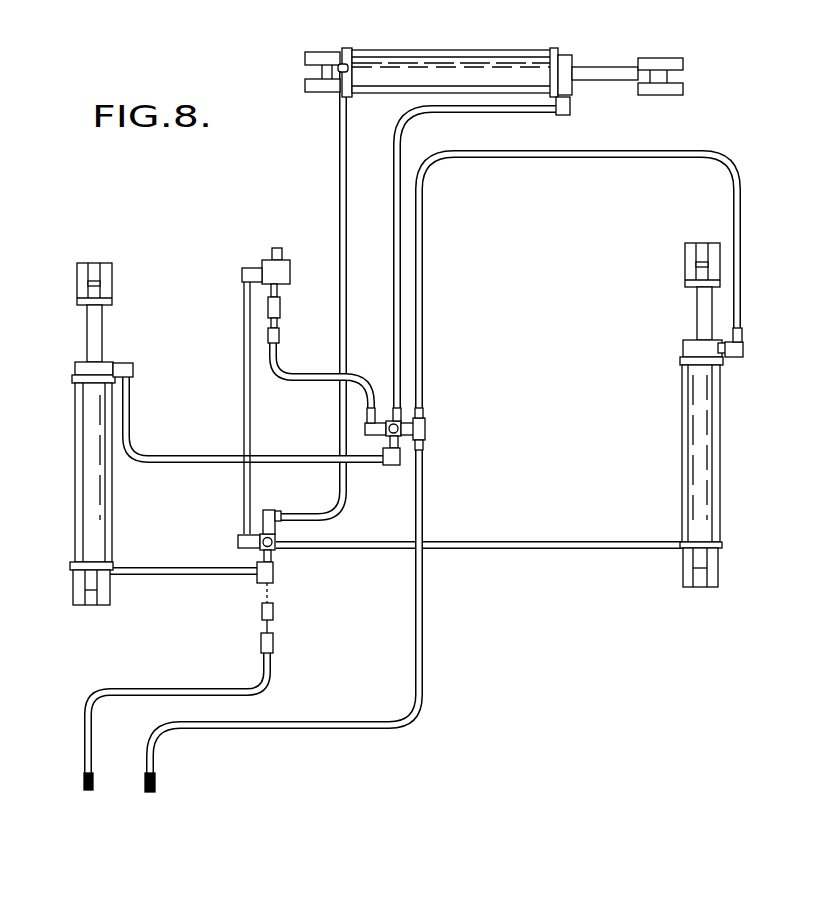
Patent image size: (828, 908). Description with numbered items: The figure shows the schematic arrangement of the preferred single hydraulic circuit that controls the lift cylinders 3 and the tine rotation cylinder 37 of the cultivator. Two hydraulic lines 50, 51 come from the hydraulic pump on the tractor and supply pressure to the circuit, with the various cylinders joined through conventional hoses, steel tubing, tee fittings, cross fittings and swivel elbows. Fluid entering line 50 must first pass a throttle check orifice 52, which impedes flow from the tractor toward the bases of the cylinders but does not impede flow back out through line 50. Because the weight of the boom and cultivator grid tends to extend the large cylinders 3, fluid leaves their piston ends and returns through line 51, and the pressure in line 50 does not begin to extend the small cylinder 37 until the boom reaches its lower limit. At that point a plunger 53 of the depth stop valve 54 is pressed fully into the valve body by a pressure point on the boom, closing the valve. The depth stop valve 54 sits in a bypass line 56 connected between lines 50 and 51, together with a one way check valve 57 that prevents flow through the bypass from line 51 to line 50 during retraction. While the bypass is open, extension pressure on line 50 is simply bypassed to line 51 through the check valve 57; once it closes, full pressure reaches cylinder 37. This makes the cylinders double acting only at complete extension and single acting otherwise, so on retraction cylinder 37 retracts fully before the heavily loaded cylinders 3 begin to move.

The lift cylinders 3 is at (100, 525).
The tine rotation cylinder 37 is at (424, 66).
The hydraulic line 50 is at (84, 778).
The hydraulic line 51 is at (156, 778).
The throttle check orifice 52 is at (275, 614).
The plunger 53 is at (270, 249).
The depth stop valve 54 is at (262, 264).
The bypass line 56 is at (277, 380).
The one way check valve 57 is at (281, 305).